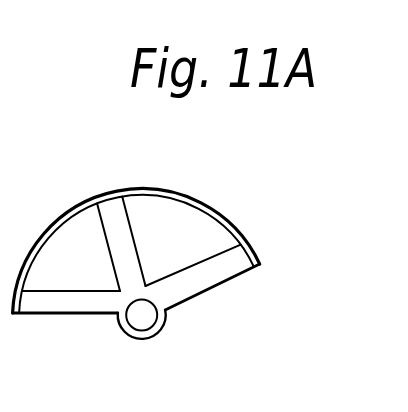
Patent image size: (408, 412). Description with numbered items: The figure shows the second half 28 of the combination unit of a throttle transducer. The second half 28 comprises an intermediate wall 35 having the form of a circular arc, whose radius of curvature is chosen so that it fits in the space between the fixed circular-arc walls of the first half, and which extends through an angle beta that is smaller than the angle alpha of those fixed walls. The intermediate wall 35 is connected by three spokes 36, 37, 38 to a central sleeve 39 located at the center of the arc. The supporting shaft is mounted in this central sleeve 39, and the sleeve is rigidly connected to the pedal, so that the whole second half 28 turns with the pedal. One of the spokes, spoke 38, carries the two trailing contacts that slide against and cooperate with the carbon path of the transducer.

The second half 28 is at (139, 252).
The intermediate wall 35 is at (160, 187).
The spoke 36 is at (47, 315).
The spoke 37 is at (101, 234).
The spoke 38 is at (190, 262).
The central sleeve 39 is at (165, 318).